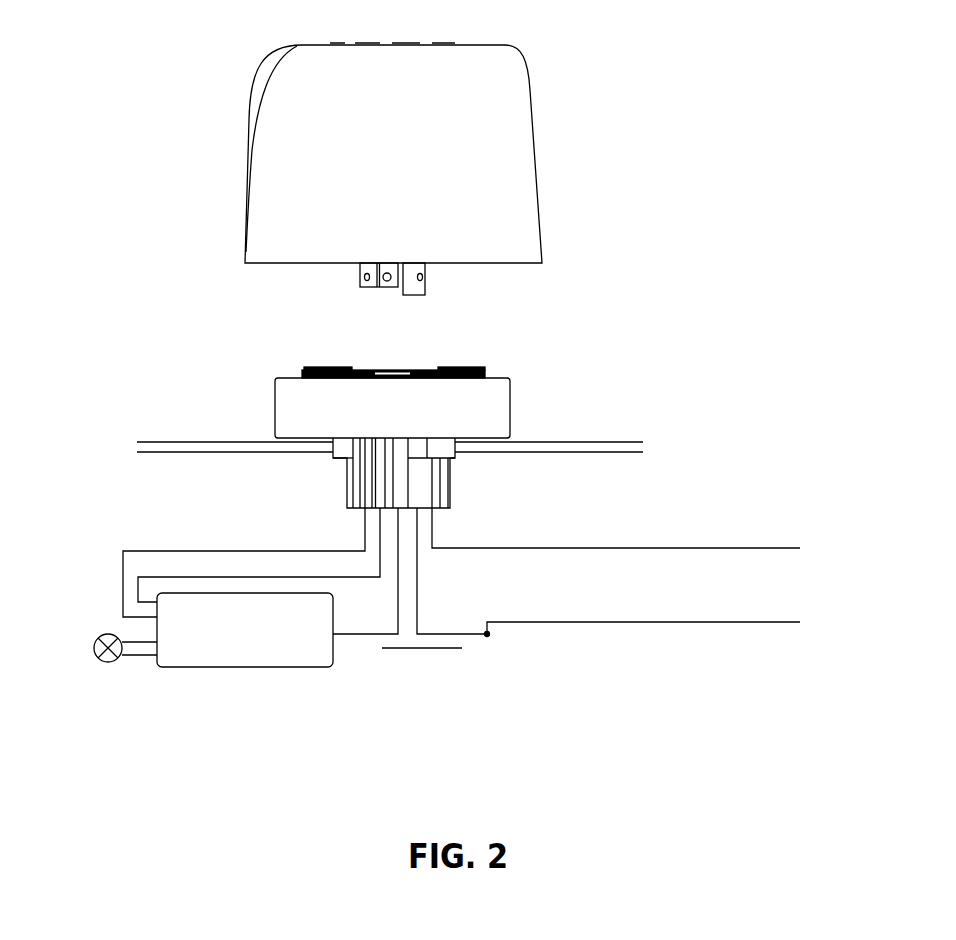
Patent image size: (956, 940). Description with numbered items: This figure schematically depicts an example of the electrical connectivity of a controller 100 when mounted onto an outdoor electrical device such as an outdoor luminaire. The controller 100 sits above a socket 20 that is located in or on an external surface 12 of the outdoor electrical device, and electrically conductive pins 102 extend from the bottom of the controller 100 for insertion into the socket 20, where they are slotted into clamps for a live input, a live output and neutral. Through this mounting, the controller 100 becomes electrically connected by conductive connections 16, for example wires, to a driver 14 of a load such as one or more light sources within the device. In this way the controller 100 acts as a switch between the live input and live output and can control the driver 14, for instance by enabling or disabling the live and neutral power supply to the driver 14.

The controller 100 is at (535, 162).
The electrically conductive pins 102 is at (418, 287).
The socket 20 is at (290, 403).
The external surface 12 is at (627, 443).
The conductive connections 16 is at (200, 551).
The driver 14 is at (272, 667).